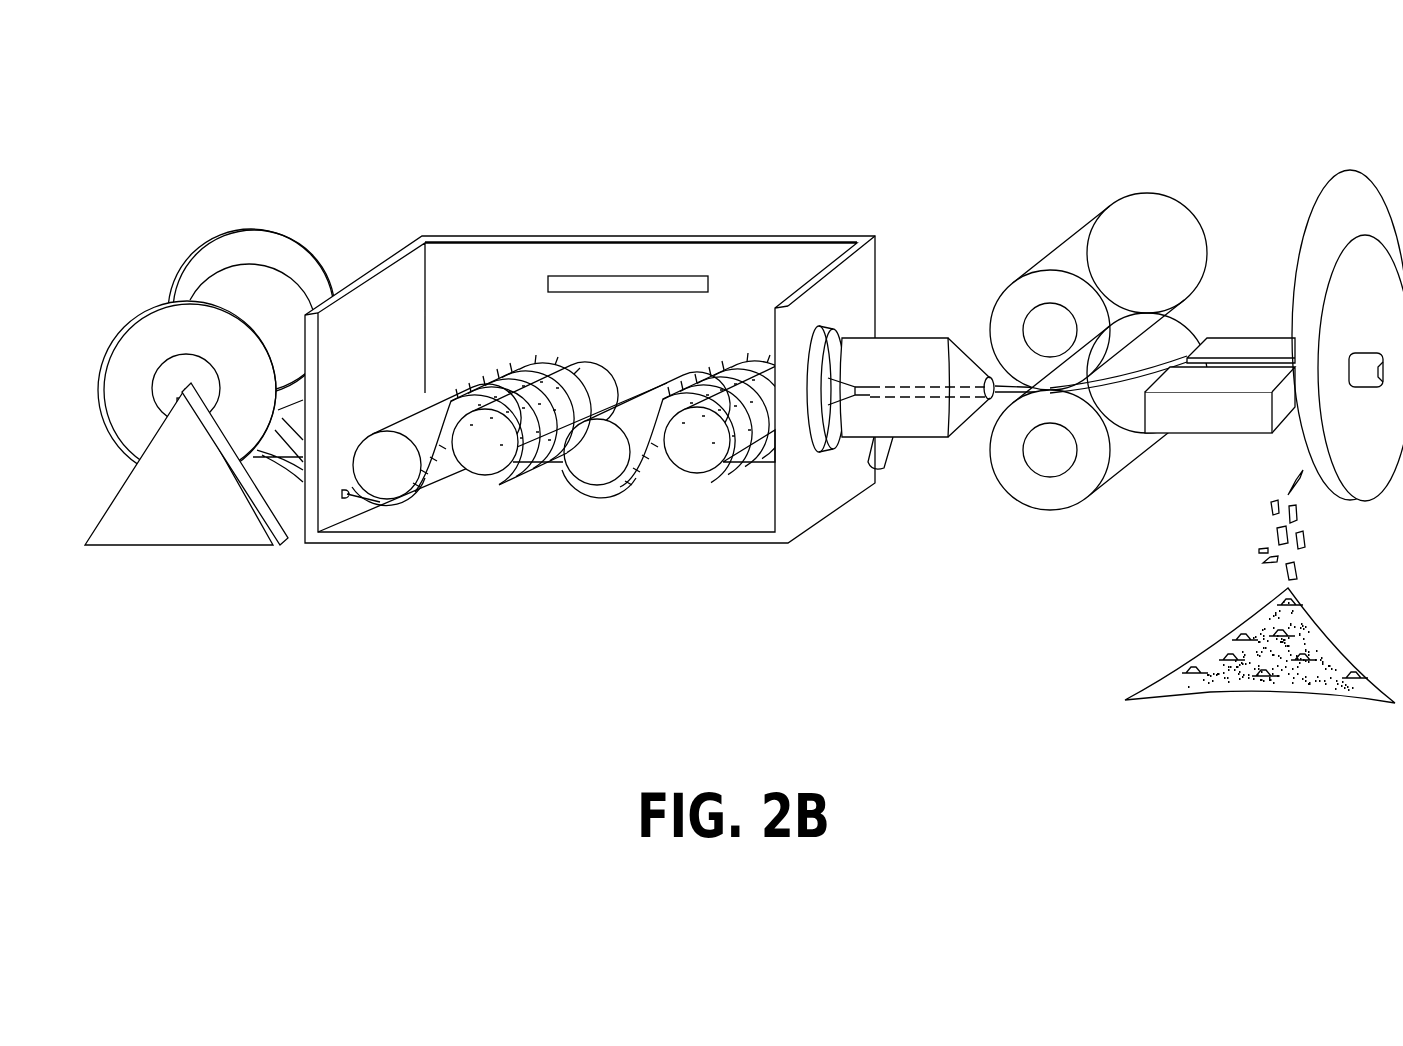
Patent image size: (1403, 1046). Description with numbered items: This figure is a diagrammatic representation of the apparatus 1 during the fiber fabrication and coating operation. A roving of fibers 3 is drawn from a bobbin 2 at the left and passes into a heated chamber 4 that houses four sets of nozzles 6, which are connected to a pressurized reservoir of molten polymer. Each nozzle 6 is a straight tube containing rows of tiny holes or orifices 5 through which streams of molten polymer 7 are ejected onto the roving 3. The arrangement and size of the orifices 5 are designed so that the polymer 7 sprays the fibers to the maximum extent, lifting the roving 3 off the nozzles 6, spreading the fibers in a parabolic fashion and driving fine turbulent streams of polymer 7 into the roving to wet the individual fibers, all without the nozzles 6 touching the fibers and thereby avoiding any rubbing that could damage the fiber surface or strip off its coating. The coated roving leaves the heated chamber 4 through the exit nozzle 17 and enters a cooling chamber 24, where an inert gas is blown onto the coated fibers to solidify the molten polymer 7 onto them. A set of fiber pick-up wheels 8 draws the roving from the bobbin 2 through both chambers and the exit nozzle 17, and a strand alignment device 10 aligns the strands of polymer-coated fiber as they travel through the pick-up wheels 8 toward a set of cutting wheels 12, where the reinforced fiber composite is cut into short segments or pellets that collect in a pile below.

The apparatus 1 is at (320, 160).
The bobbin 2 is at (212, 262).
The roving of fibers 3 is at (597, 407).
The heated chamber 4 is at (527, 240).
The orifices 5 is at (575, 370).
The nozzles 6 is at (393, 482).
The molten polymer 7 is at (737, 333).
The fiber pick-up wheels 8 is at (1100, 212).
The strand alignment device 10 is at (1253, 378).
The cutting wheels 12 is at (1318, 165).
The exit nozzle 17 is at (830, 392).
The cooling chamber 24 is at (927, 333).